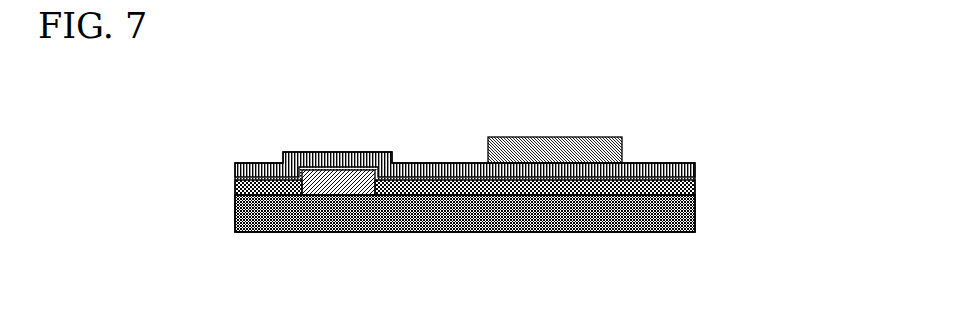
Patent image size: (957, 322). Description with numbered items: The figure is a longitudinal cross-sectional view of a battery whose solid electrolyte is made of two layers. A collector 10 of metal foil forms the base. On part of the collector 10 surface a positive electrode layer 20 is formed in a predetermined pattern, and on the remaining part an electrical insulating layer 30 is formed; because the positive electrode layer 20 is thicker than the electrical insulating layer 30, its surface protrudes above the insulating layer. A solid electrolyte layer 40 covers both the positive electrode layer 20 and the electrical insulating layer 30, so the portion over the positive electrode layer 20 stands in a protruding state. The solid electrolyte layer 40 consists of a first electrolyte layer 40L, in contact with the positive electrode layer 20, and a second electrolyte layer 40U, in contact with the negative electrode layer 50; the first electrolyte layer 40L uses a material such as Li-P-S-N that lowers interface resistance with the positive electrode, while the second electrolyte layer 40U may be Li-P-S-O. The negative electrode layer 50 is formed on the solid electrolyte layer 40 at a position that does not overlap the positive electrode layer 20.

The collector 10 is at (425, 232).
The positive electrode layer 20 is at (295, 158).
The electrical insulating layer 30 is at (695, 185).
The solid electrolyte layer 40 is at (437, 93).
The second electrolyte layer 40U is at (428, 162).
The first electrolyte layer 40L is at (465, 167).
The negative electrode layer 50 is at (612, 137).